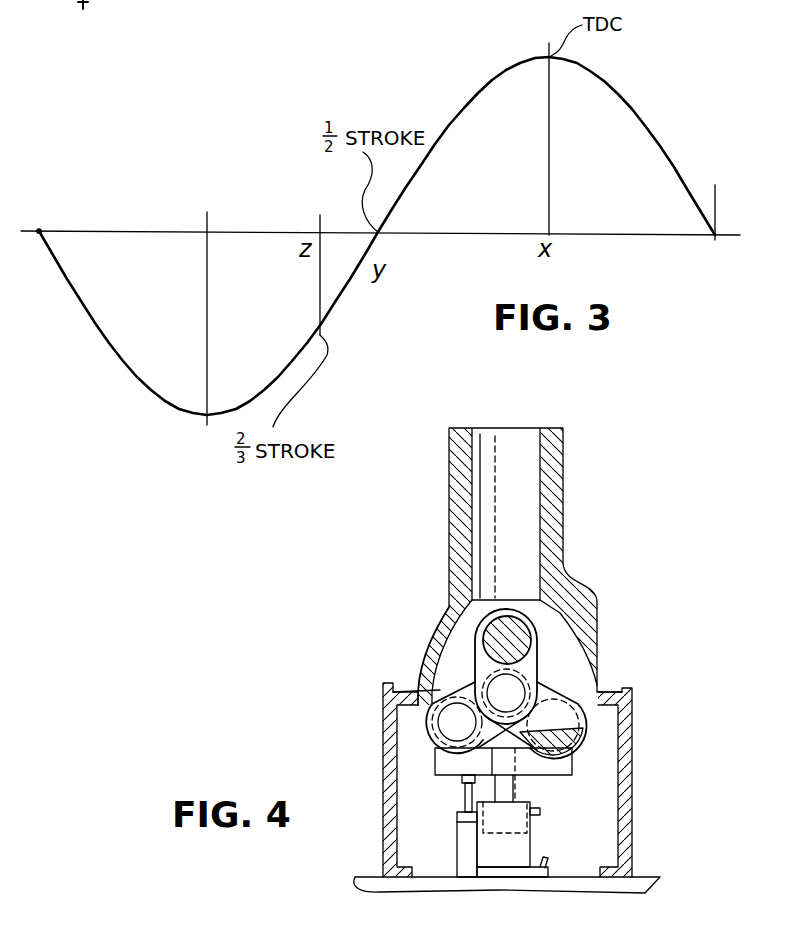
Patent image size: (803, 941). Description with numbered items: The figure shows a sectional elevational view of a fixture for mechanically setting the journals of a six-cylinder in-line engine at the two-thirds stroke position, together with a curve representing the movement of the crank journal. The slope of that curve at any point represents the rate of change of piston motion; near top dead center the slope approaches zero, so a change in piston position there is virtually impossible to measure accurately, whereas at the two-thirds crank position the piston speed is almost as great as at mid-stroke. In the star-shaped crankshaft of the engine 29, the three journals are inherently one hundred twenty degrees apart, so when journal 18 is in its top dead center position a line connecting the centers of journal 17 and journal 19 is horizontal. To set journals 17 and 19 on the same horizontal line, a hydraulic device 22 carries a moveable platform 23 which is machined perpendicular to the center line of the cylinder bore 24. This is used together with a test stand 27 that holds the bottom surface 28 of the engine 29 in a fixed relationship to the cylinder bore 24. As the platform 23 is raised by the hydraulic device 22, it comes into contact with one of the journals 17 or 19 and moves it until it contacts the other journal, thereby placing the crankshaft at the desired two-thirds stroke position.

The journal 17 is at (568, 698).
The journal 18 is at (490, 638).
The journal 19 is at (432, 733).
The hydraulic device 22 is at (527, 845).
The moveable platform 23 is at (572, 765).
The cylinder bore 24 is at (517, 440).
The test stand 27 is at (630, 750).
The bottom surface 28 is at (628, 700).
The engine 29 is at (563, 507).